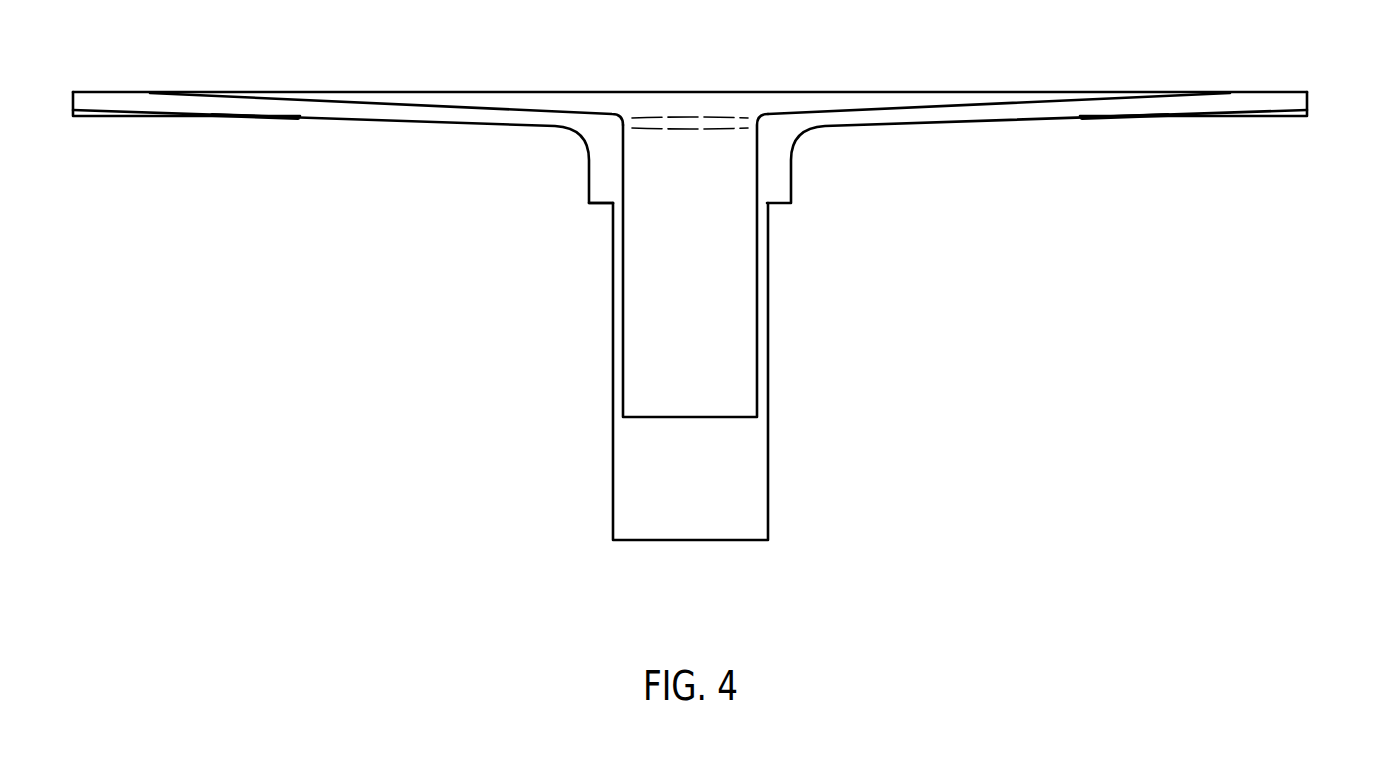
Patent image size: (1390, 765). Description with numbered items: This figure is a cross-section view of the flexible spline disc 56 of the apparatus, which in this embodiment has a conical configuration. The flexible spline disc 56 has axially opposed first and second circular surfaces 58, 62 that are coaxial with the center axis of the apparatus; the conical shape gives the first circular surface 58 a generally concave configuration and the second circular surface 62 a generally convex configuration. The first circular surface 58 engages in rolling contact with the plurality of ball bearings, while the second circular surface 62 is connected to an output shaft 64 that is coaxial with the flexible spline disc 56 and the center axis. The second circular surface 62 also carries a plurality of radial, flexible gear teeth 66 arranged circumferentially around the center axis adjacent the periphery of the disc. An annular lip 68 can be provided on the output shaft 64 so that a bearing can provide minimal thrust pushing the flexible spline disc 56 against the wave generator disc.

The flexible spline disc 56 is at (1310, 98).
The flexible spline disc first circular surface 58 is at (416, 96).
The flexible spline disc second circular surface 62 is at (418, 122).
The output shaft 64 is at (613, 357).
The radial, flexible gear teeth 66 is at (138, 117).
The annular lip 68 is at (600, 205).